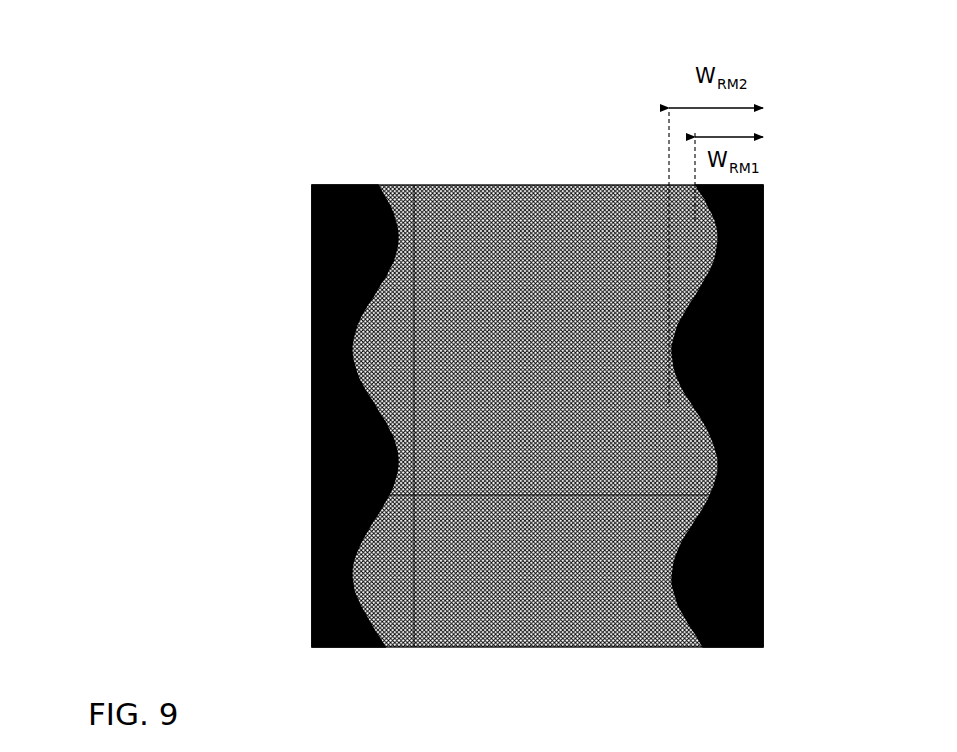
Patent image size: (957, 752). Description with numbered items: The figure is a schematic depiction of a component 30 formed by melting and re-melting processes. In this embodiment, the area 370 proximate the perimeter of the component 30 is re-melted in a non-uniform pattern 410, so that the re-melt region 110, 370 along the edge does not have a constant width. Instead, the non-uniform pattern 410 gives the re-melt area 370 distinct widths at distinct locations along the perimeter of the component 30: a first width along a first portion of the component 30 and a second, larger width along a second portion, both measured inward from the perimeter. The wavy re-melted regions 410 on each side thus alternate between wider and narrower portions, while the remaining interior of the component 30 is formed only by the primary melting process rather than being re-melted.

The component 30 is at (198, 73).
The re-melt region 110 is at (338, 157).
The re-melting area 370 is at (788, 242).
The non-uniform pattern 410 is at (312, 268).